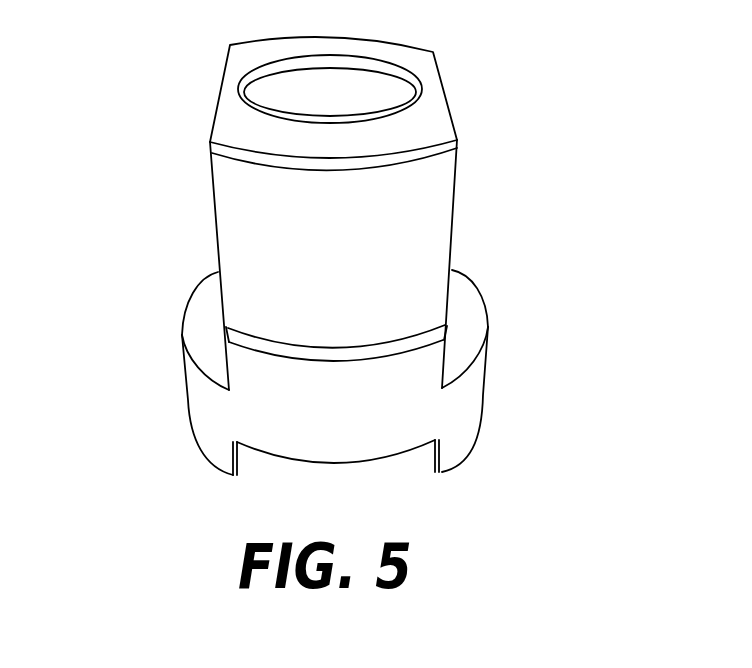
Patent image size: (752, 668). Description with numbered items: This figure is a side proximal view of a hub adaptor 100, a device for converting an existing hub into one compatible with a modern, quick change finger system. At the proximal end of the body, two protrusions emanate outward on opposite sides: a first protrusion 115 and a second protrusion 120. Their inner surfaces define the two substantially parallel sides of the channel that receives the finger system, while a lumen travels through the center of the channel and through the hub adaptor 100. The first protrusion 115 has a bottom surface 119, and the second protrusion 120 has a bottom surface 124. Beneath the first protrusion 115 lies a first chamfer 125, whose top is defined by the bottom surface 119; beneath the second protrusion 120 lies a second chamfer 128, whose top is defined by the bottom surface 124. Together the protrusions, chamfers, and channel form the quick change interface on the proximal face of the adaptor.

The hub adaptor 100 is at (240, 58).
The first chamfer 125 is at (213, 198).
The second chamfer 128 is at (445, 175).
The bottom surface 119 is at (207, 320).
The bottom surface 124 is at (468, 315).
The second protrusion 120 is at (460, 438).
The first protrusion 115 is at (213, 442).